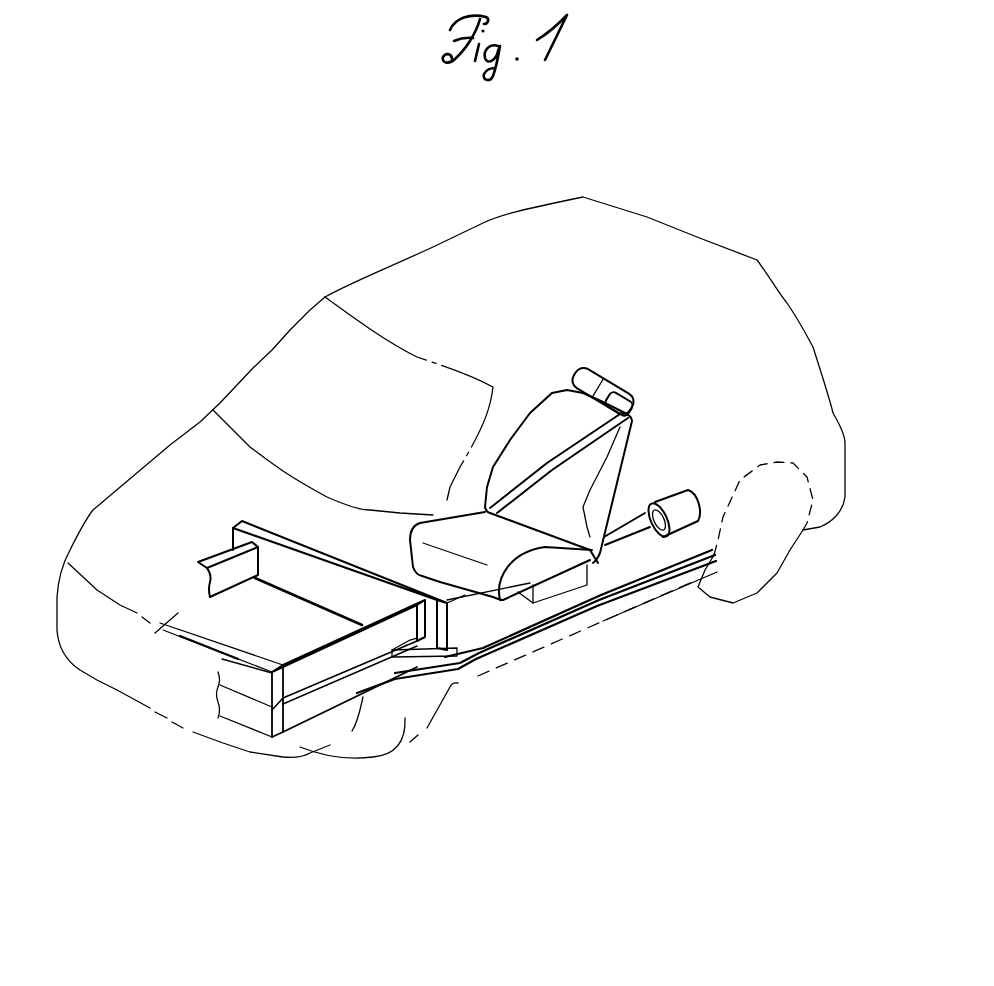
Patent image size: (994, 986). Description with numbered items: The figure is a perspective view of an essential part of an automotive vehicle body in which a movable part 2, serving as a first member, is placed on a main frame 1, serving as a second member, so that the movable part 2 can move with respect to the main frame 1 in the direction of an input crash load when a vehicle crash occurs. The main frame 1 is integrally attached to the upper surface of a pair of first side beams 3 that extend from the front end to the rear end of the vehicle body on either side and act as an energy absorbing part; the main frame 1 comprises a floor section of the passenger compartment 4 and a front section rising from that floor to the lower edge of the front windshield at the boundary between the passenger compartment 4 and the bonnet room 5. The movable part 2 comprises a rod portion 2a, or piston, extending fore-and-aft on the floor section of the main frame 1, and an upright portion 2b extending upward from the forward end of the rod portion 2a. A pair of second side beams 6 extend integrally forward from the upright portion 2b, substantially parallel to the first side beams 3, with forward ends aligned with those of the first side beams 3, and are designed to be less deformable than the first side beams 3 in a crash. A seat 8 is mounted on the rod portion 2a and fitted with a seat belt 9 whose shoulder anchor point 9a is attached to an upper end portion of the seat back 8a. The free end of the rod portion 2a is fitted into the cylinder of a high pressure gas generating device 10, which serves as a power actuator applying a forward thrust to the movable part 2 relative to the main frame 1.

The main frame 1 is at (630, 570).
The movable part 2 is at (483, 796).
The rod portion 2a is at (463, 604).
The upright portion 2b is at (466, 650).
The first side beams 3 is at (313, 703).
The passenger compartment 4 is at (646, 324).
The bonnet room 5 is at (170, 596).
The second side beams 6 is at (218, 552).
The seat 8 is at (440, 527).
The seat back 8a is at (528, 410).
The seat belt 9 is at (560, 430).
The shoulder anchor point 9a is at (633, 410).
The high pressure gas generating device 10 is at (682, 484).